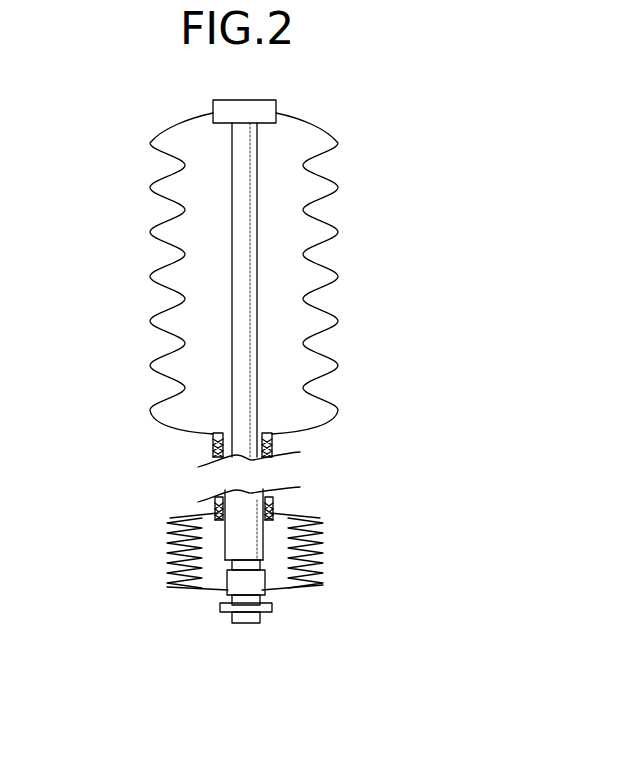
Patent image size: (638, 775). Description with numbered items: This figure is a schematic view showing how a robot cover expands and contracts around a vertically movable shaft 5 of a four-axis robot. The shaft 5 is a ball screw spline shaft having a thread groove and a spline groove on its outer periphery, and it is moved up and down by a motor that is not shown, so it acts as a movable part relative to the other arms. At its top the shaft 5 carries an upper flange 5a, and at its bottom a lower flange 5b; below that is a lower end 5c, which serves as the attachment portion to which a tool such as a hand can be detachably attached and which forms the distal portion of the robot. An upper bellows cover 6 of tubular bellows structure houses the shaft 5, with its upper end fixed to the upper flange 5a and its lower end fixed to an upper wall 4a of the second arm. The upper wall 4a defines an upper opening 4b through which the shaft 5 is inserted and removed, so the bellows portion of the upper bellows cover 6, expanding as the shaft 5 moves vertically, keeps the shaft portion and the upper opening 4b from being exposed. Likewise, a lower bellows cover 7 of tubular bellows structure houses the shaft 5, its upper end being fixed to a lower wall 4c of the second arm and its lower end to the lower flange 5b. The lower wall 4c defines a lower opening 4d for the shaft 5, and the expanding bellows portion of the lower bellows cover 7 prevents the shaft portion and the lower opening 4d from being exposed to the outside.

The shaft 5 is at (257, 202).
The upper flange 5a is at (267, 101).
The lower flange 5b is at (268, 590).
The lower end 5c is at (243, 623).
The upper bellows cover 6 is at (150, 233).
The lower bellows cover 7 is at (167, 553).
The upper wall 4a is at (273, 444).
The upper opening 4b is at (248, 444).
The lower wall 4c is at (273, 505).
The lower opening 4d is at (243, 520).